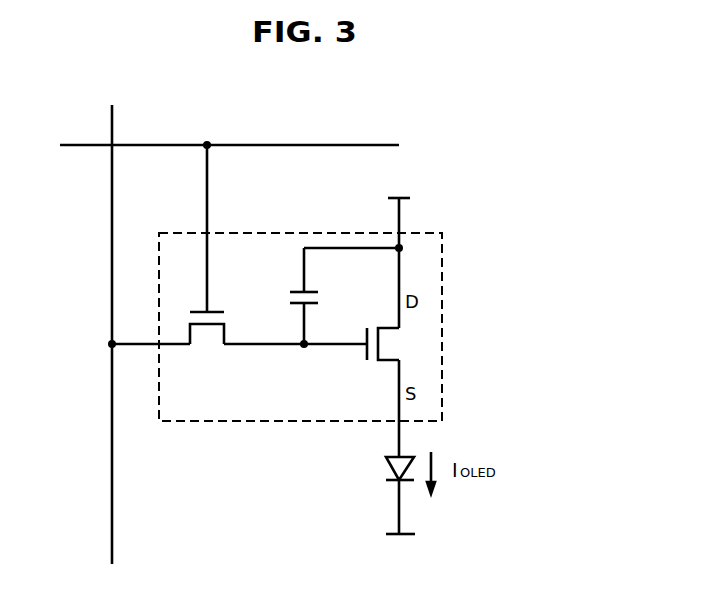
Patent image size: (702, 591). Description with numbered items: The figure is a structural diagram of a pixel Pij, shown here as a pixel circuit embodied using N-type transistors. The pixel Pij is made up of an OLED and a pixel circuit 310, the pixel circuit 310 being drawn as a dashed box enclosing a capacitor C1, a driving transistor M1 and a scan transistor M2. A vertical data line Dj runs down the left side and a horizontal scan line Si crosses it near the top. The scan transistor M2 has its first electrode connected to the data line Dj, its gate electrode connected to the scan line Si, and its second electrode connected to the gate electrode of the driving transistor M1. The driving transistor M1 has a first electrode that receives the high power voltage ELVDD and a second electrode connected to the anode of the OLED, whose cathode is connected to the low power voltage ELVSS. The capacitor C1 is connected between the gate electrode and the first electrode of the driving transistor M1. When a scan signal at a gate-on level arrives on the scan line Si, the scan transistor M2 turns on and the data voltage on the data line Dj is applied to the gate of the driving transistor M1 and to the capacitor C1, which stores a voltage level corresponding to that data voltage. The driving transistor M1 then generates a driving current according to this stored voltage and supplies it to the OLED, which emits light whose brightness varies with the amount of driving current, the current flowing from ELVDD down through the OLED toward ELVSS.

The pixel circuit 310 is at (442, 312).
The pixel Pij is at (540, 138).
The driving transistor M1 is at (365, 392).
The scan transistor M2 is at (208, 258).
The capacitor C1 is at (344, 296).
The organic light emitting diode OLED is at (366, 495).
The data line Dj is at (113, 318).
The scan line Si is at (215, 143).
The high power voltage ELVDD is at (395, 249).
The low power voltage ELVSS is at (397, 551).